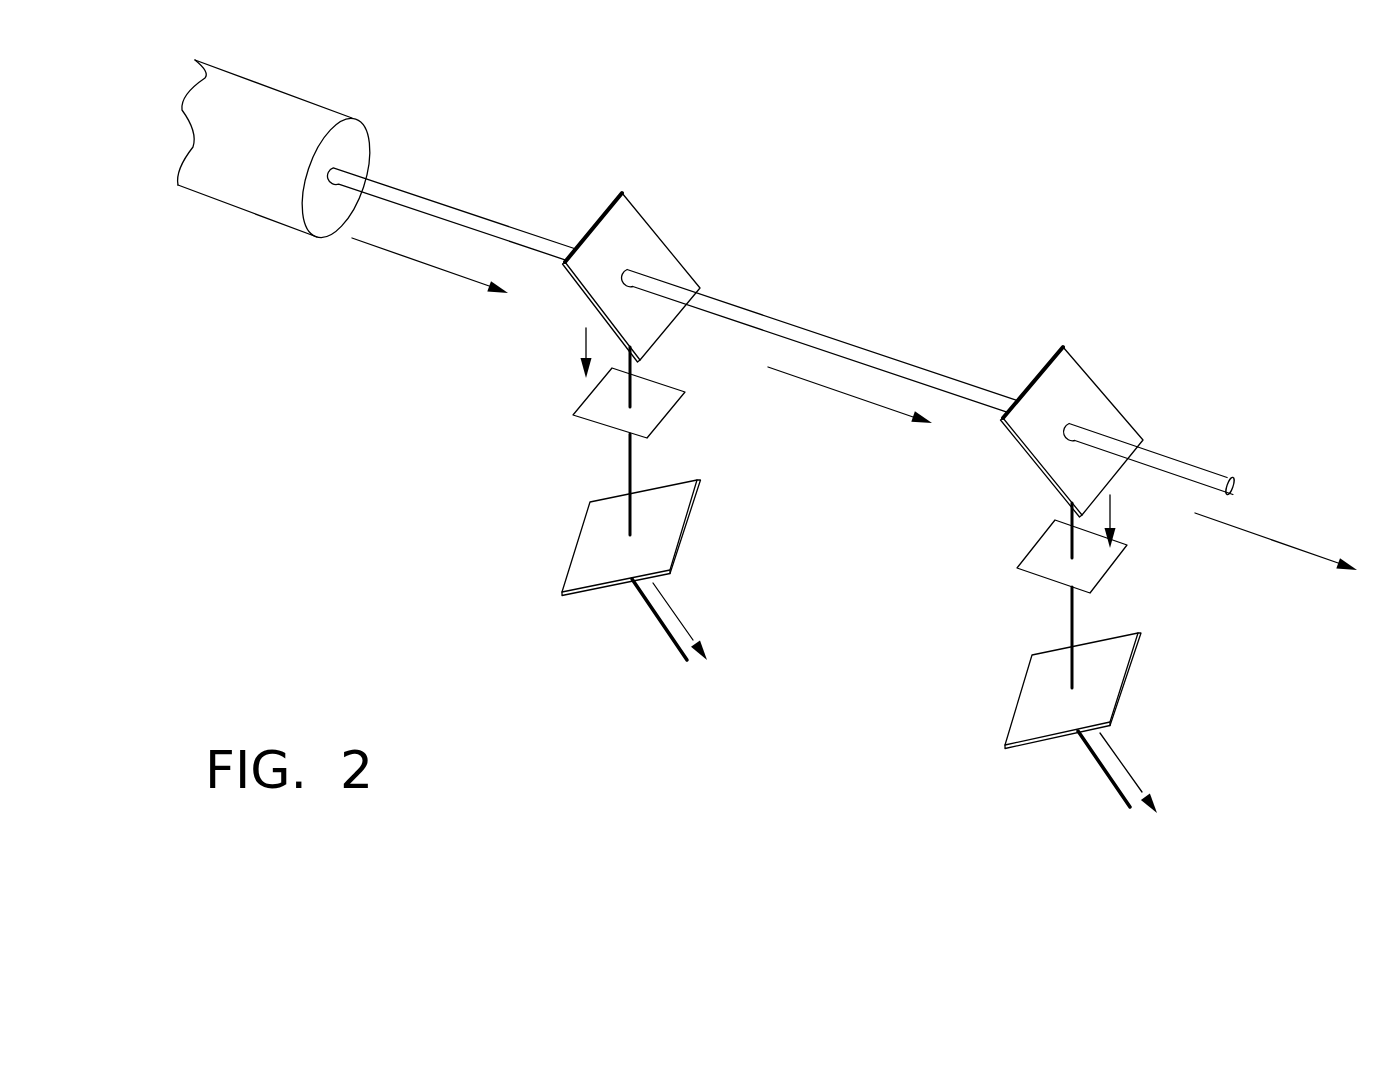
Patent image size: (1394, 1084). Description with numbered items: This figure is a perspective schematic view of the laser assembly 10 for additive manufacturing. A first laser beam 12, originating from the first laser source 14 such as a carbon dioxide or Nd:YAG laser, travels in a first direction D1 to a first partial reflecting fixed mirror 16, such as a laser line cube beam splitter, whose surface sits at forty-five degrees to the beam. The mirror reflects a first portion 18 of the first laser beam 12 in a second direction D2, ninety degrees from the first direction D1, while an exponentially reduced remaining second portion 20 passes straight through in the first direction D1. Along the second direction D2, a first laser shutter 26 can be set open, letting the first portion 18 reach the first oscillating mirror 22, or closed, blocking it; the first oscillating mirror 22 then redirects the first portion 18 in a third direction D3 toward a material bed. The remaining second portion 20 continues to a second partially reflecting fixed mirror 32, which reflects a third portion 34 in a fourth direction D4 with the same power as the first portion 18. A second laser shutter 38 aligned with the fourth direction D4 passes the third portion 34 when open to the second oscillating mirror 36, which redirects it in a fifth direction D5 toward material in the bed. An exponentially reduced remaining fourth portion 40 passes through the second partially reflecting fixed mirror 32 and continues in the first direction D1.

The laser assembly 10 is at (862, 116).
The first laser beam 12 is at (428, 207).
The first laser source 14 is at (278, 108).
The first partial reflecting fixed mirror 16 is at (635, 210).
The first portion of first laser beam 18 is at (632, 368).
The exponentially reduced remaining second portion of first laser beam 20 is at (777, 330).
The first oscillating mirror 22 is at (675, 505).
The first laser shutter 26 is at (647, 407).
The second partially reflecting fixed mirror 32 is at (1055, 377).
The third portion of exponentially reduced remaining second portion 34 is at (1072, 530).
The second oscillating mirror 36 is at (1032, 722).
The second laser shutter 38 is at (1048, 568).
The exponentially reduced remaining fourth portion 40 is at (1170, 463).
The first direction D1 is at (425, 267).
The second direction D2 is at (585, 338).
The third direction D3 is at (680, 620).
The fourth direction D4 is at (1112, 510).
The fifth direction D5 is at (1122, 762).